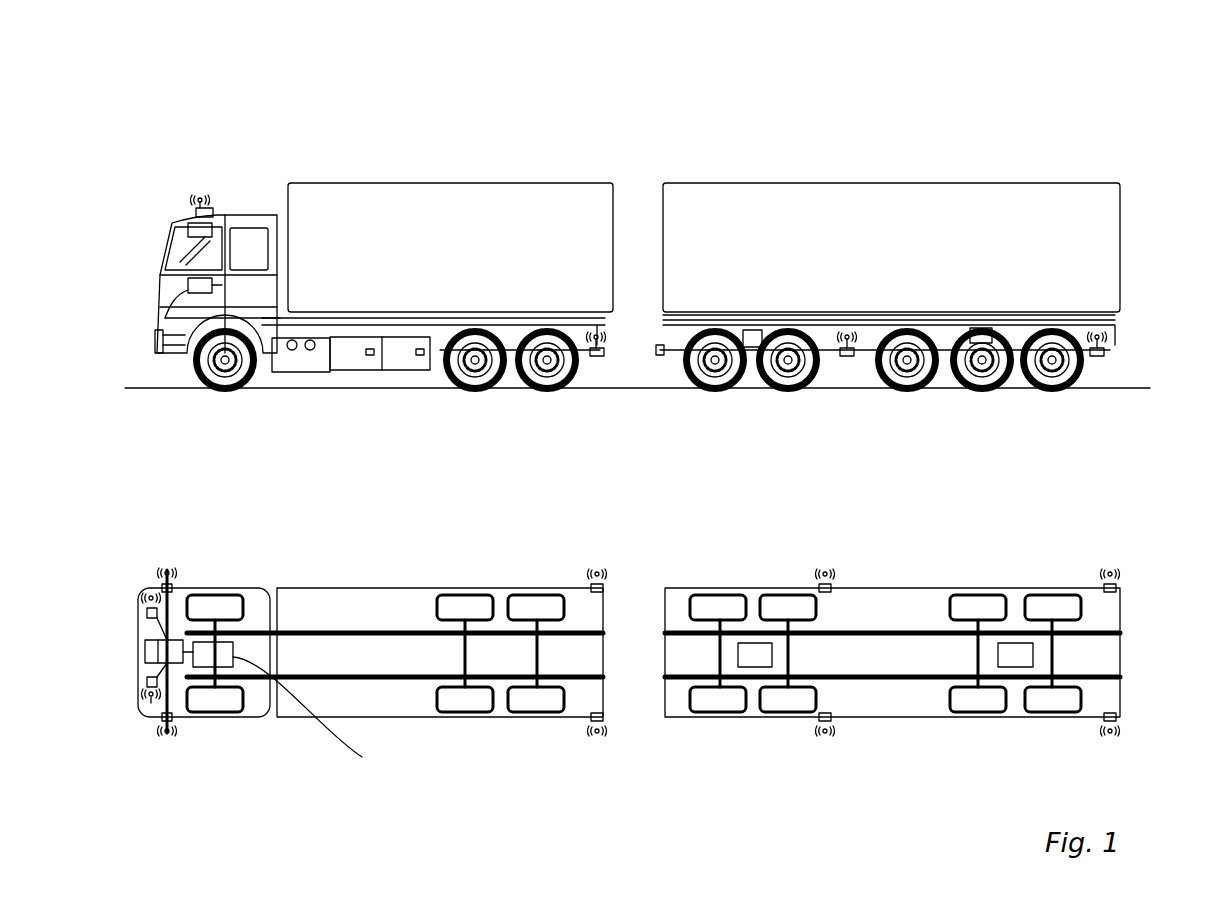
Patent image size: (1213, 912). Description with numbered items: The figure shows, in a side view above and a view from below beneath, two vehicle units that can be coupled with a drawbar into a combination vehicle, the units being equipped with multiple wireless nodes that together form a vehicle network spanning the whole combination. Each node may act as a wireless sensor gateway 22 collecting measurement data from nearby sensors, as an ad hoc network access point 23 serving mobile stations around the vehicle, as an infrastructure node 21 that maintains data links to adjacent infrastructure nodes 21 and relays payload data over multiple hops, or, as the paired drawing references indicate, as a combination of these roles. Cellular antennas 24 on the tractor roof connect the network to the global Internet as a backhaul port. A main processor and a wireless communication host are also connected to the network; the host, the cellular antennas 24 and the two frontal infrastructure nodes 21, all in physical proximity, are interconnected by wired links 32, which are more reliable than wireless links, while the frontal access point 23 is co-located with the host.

The infrastructure node 21 is at (597, 358).
The wireless sensor gateway 22 is at (753, 330).
The ad hoc network access point 23 is at (213, 203).
The cellular antenna 24 is at (147, 612).
The wired link 32 is at (158, 612).